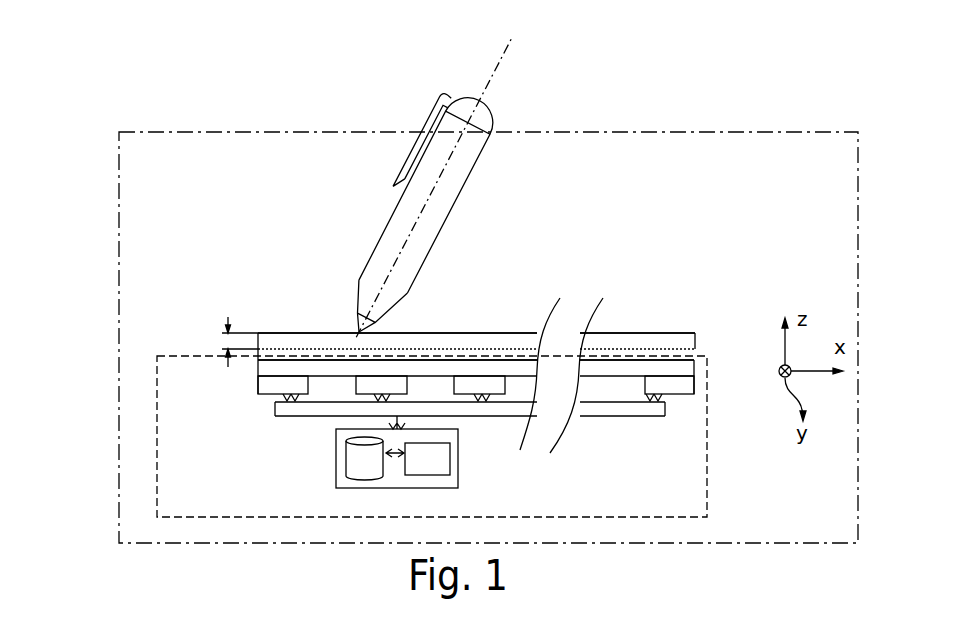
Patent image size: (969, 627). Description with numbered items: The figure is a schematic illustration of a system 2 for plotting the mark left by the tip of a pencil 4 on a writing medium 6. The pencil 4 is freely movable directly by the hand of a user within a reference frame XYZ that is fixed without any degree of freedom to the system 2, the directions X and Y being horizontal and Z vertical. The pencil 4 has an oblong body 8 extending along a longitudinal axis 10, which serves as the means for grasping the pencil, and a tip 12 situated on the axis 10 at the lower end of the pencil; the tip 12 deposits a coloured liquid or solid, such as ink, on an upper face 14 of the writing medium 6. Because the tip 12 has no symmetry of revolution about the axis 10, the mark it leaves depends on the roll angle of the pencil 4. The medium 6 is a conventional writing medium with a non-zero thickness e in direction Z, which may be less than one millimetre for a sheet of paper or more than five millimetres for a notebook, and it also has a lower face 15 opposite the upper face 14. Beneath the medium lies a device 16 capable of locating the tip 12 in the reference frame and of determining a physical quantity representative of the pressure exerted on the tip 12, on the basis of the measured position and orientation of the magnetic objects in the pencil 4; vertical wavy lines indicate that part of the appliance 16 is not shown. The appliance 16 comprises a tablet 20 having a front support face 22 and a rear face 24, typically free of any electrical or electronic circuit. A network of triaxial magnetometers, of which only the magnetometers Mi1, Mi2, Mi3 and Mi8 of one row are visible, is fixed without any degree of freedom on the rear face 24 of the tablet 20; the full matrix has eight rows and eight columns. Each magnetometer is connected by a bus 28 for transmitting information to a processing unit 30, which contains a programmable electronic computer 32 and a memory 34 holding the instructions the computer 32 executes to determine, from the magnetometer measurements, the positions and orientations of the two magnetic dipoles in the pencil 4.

The system 2 is at (110, 268).
The pencil 4 is at (436, 177).
The writing medium 6 is at (514, 323).
The oblong body 8 is at (424, 192).
The longitudinal axis 10 is at (433, 188).
The tip 12 is at (373, 306).
The upper face 14 is at (648, 332).
The lower face 15 is at (668, 350).
The device 16 is at (197, 347).
The tablet 20 is at (249, 379).
The front support face 22 is at (248, 363).
The rear face 24 is at (297, 396).
The bus 28 is at (300, 410).
The processing unit 30 is at (407, 470).
The programmable electronic computer 32 is at (432, 467).
The memory 34 is at (363, 449).
The thickness e is at (228, 339).
The triaxial magnetometer Mi1 is at (257, 392).
The triaxial magnetometer Mi2 is at (360, 386).
The triaxial magnetometer Mi3 is at (466, 386).
The triaxial magnetometer Mi8 is at (677, 385).